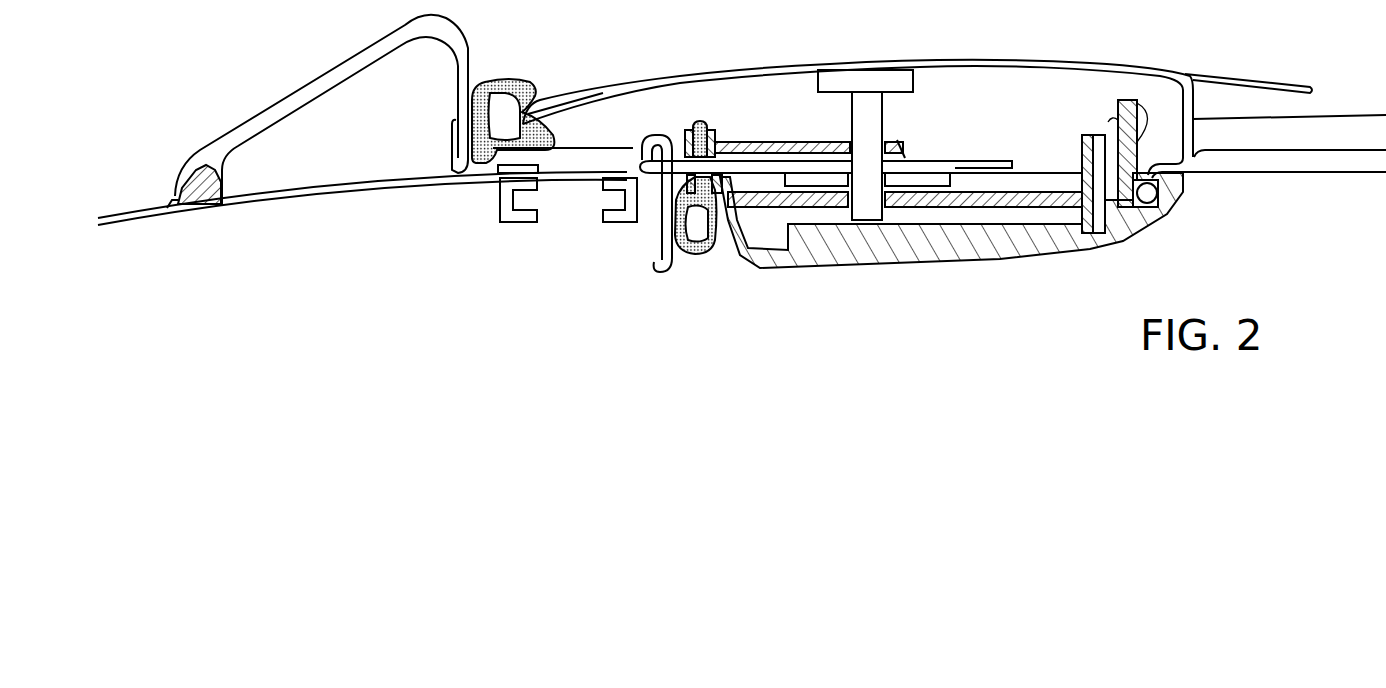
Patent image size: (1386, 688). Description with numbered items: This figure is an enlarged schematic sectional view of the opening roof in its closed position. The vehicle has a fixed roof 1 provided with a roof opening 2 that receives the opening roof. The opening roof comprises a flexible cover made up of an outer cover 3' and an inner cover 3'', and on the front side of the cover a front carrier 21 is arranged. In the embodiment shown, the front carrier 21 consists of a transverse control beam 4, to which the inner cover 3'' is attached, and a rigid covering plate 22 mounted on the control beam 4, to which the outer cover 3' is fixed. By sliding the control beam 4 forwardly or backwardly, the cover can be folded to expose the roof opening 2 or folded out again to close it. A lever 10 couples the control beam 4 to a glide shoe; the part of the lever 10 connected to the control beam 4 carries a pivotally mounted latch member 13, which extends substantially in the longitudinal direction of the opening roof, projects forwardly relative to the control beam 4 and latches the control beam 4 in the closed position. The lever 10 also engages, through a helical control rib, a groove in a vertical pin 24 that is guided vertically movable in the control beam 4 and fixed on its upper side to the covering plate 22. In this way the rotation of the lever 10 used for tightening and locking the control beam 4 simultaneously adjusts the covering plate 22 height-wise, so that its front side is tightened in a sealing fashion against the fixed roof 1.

The fixed roof 1 is at (318, 190).
The roof opening 2 is at (657, 266).
The outer cover 3' is at (1248, 68).
The inner cover 3'' is at (1269, 189).
The control beam 4 is at (990, 243).
The lever 10 is at (920, 180).
The latch member 13 is at (756, 148).
The front carrier 21 is at (954, 120).
The covering plate 22 is at (932, 63).
The vertical pin 24 is at (863, 105).